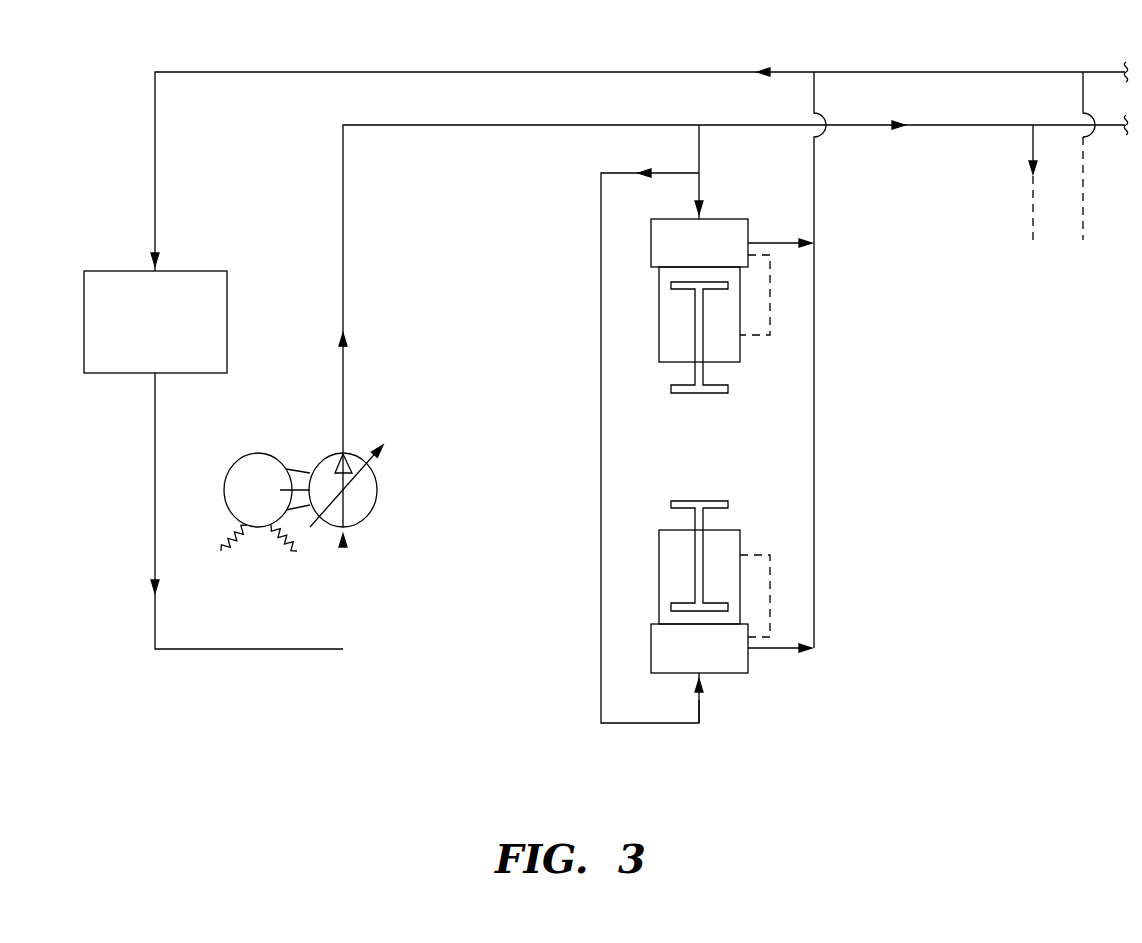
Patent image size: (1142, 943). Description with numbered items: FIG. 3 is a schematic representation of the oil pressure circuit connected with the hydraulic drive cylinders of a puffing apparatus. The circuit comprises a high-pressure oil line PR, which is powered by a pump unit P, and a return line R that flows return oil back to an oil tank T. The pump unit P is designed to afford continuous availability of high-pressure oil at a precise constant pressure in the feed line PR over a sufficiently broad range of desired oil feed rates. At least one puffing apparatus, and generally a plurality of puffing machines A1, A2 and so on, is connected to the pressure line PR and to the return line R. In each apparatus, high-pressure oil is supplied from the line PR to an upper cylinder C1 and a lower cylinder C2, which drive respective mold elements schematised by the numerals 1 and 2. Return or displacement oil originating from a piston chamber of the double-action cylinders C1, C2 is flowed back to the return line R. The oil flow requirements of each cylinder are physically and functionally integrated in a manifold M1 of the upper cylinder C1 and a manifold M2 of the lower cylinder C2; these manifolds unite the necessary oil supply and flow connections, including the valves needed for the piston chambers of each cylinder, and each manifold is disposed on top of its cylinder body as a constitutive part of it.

The return line R is at (399, 72).
The high-pressure oil line PR is at (399, 125).
The oil tank T is at (215, 460).
The pump unit P is at (352, 486).
The manifold of upper cylinder M1 is at (731, 243).
The upper cylinder C1 is at (701, 308).
The mold element 1 is at (709, 342).
The mold element 2 is at (709, 551).
The lower cylinder C2 is at (701, 583).
The manifold of lower cylinder M2 is at (731, 648).
The puffing machine A1 is at (704, 731).
The puffing machine A2 is at (1058, 232).